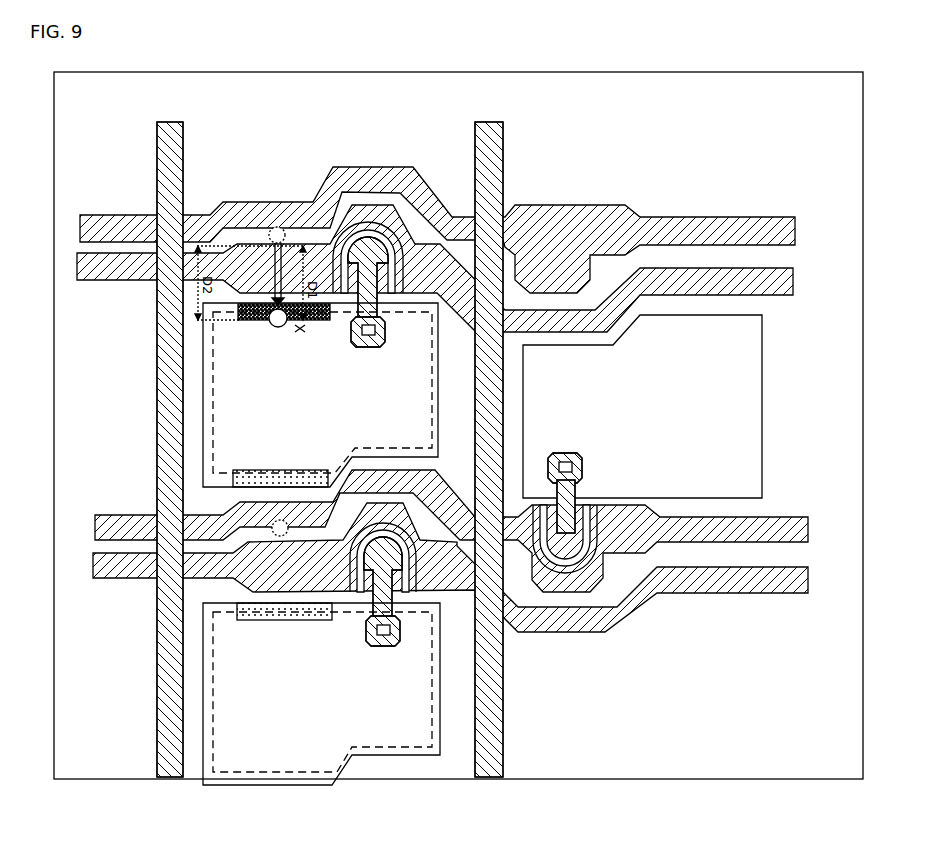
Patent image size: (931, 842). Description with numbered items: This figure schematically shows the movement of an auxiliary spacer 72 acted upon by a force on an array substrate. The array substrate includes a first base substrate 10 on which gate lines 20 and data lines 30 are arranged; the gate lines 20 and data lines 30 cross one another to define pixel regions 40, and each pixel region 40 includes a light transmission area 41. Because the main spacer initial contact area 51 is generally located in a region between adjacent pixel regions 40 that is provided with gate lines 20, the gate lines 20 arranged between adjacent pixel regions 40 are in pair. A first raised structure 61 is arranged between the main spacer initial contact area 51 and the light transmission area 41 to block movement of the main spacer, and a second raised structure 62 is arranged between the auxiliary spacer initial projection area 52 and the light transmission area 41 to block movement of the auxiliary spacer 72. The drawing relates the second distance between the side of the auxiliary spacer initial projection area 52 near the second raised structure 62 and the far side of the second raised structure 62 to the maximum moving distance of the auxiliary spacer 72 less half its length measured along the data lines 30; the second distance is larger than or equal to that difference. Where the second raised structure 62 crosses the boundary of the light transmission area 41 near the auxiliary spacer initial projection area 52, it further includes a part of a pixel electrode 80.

The first base substrate 10 is at (709, 80).
The gate line 20 is at (800, 588).
The data line 30 is at (495, 128).
The pixel region 40 is at (190, 440).
The light transmission area 41 is at (203, 388).
The main spacer initial contact area 51 is at (272, 528).
The auxiliary spacer initial projection area 52 is at (277, 227).
The first raised structure 61 is at (233, 479).
The second raised structure 62 is at (325, 323).
The auxiliary spacer 72 is at (281, 327).
The pixel electrode 80 is at (203, 690).